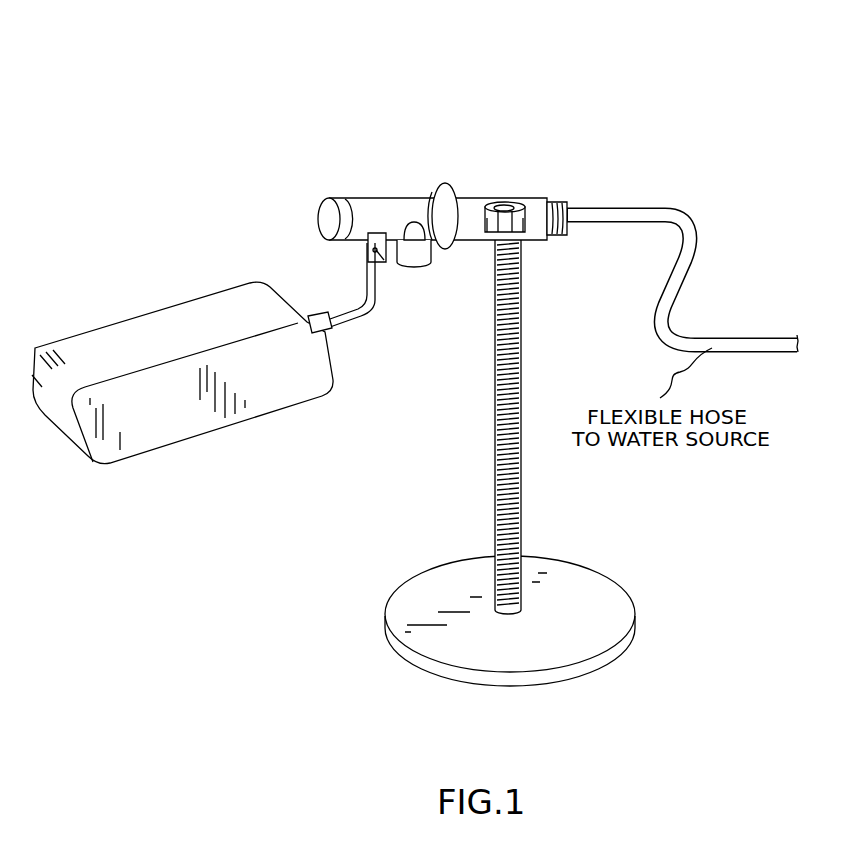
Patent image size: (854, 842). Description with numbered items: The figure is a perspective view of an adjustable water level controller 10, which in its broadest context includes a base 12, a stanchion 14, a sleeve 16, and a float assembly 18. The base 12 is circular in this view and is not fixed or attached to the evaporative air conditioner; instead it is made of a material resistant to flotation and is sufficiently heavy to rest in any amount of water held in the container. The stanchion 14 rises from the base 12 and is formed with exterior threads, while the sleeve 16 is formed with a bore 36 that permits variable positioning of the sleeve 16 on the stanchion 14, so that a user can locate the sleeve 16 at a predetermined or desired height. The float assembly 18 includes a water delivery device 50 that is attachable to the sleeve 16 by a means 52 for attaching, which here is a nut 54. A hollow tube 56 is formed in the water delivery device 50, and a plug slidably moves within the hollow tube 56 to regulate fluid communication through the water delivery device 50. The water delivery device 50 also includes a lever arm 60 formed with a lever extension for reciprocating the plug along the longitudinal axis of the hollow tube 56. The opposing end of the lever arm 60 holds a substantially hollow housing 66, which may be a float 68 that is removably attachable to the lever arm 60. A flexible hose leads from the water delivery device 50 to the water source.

The adjustable water level controller 10 is at (672, 100).
The base 12 is at (573, 576).
The stanchion 14 is at (520, 341).
The sleeve 16 is at (522, 224).
The float assembly 18 is at (390, 241).
The bore 36 is at (514, 203).
The water delivery device 50 is at (465, 197).
The means for attaching water delivery device to sleeve 52 is at (501, 190).
The nut 54 is at (493, 224).
The hollow tube 56 is at (380, 208).
The lever arm 60 is at (368, 303).
The substantially hollow housing 66 is at (195, 362).
The float 68 is at (168, 327).